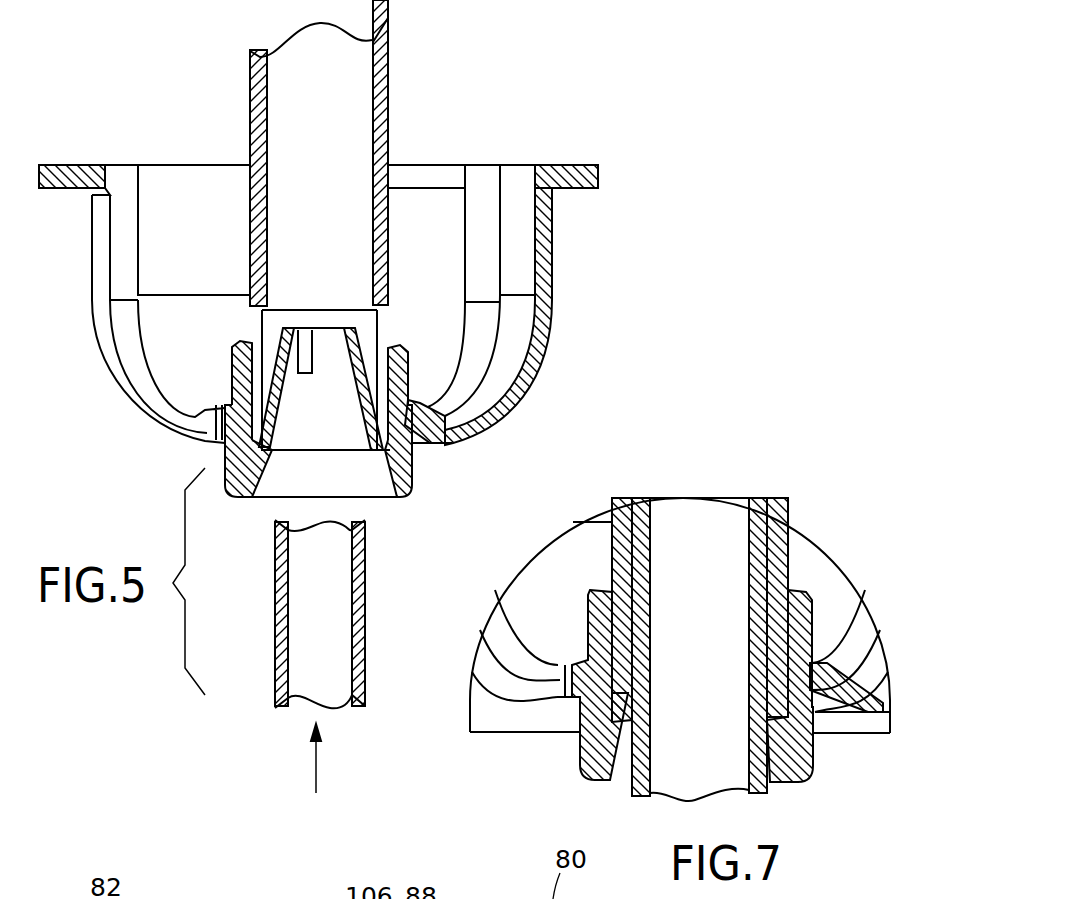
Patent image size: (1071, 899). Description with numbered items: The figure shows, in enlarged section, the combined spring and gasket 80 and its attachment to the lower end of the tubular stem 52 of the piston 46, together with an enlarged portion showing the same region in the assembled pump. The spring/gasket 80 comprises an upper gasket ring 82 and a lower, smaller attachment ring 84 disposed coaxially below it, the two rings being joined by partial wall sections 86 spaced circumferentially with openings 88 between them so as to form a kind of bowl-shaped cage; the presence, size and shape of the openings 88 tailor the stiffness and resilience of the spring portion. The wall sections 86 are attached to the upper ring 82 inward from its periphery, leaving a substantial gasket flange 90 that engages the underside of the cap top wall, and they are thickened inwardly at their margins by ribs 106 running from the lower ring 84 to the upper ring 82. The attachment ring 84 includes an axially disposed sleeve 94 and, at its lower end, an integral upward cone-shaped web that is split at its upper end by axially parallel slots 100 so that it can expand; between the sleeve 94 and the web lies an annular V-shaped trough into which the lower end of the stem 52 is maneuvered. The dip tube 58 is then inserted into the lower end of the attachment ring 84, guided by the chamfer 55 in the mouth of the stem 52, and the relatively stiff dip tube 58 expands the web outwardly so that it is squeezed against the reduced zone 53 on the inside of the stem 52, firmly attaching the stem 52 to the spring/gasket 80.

In FIG. 5, the slots 100 is at (88, 165).
In FIG. 5, the partial wall sections 86 is at (195, 223).
In FIG. 7, the partial wall sections 86 is at (880, 714).
In FIG. 5, the openings 88 is at (440, 188).
In FIG. 5, the ribs 106 is at (480, 186).
In FIG. 5, the upper gasket ring 82 is at (548, 180).
In FIG. 5, the gasket flange 90 is at (598, 178).
In FIG. 5, the reduced zone 53 is at (377, 330).
In FIG. 5, the sleeve 94 is at (232, 372).
In FIG. 7, the sleeve 94 is at (800, 618).
In FIG. 5, the chamfer 55 is at (262, 445).
In FIG. 5, the combined spring and gasket 80 is at (548, 360).
In FIG. 5, the lower attachment ring 84 is at (418, 471).
In FIG. 5, the dip tube 58 is at (365, 633).
In FIG. 7, the dip tube 58 is at (708, 620).
In FIG. 7, the tubular stem 52 is at (778, 528).
In FIG. 7, the piston 46 is at (620, 683).